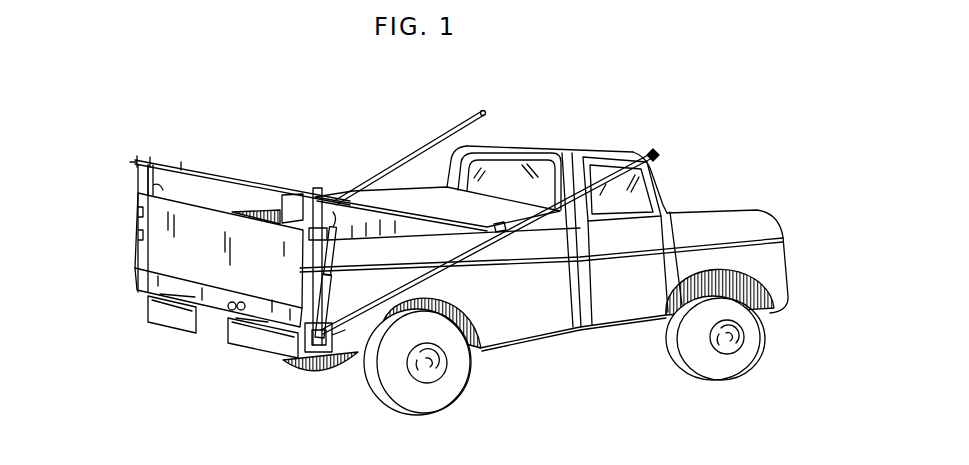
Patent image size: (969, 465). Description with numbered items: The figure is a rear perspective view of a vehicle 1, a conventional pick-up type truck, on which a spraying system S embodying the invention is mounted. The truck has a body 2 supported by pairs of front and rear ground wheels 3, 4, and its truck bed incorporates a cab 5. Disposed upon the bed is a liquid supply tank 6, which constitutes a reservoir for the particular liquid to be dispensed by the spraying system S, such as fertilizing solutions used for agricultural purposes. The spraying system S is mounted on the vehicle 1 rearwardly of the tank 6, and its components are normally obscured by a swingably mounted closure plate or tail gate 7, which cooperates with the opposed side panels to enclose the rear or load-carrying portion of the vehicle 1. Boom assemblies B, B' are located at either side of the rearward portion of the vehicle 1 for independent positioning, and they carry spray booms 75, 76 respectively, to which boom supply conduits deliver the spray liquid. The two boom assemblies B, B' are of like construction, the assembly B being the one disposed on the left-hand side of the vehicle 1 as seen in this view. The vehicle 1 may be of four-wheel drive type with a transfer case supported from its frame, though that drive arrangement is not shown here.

The vehicle 1 is at (712, 195).
The body 2 is at (534, 307).
The front ground wheels 3 is at (752, 344).
The rear ground wheels 4 is at (420, 400).
The cab 5 is at (592, 154).
The liquid supply tank 6 is at (433, 192).
The tail gate 7 is at (208, 244).
The spray boom 75 is at (464, 123).
The spray boom 76 is at (573, 192).
The spraying system S is at (222, 202).
The boom assembly B is at (416, 144).
The boom assembly B' is at (490, 236).